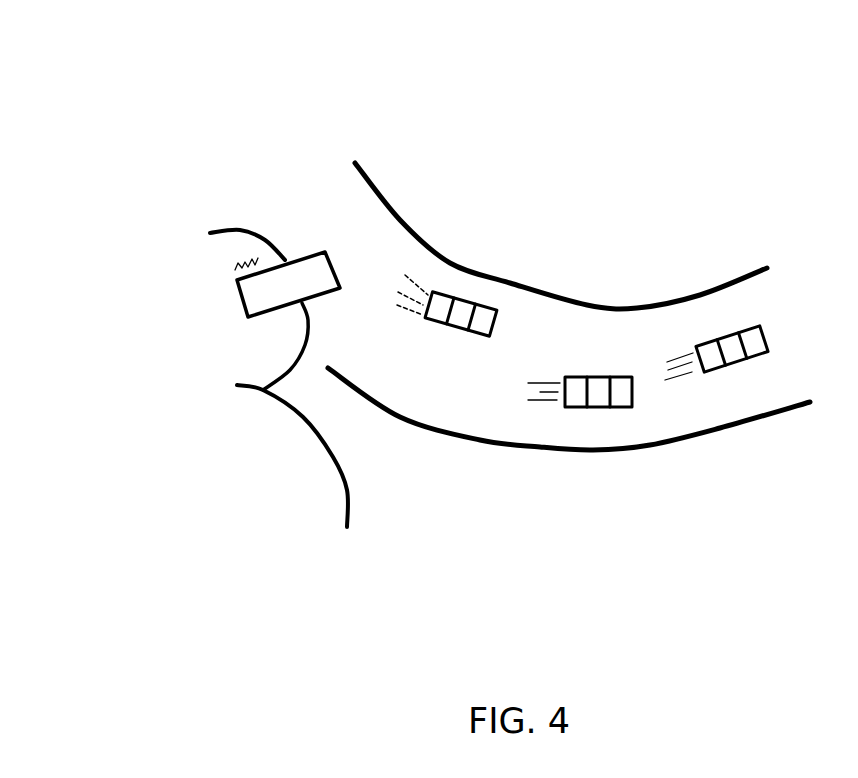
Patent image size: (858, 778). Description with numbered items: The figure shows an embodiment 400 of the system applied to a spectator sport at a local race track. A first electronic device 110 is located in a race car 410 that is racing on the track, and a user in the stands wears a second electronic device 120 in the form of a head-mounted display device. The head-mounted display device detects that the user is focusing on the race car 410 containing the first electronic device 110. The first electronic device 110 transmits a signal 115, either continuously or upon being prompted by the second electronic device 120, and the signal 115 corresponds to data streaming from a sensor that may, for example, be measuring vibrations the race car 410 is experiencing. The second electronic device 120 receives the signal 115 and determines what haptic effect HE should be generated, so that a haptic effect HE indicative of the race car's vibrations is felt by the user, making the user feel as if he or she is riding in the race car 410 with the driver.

The embodiment of the system 400 is at (178, 82).
The race car 410 is at (516, 312).
The second electronic device 120 is at (312, 258).
The haptic effect HE is at (229, 260).
The first electronic device 110 is at (460, 293).
The signal 115 is at (436, 270).